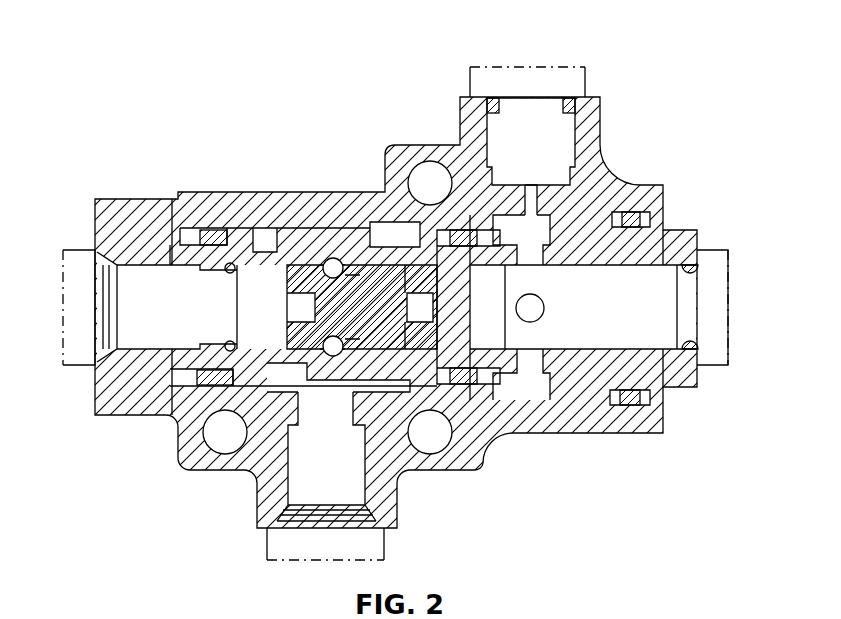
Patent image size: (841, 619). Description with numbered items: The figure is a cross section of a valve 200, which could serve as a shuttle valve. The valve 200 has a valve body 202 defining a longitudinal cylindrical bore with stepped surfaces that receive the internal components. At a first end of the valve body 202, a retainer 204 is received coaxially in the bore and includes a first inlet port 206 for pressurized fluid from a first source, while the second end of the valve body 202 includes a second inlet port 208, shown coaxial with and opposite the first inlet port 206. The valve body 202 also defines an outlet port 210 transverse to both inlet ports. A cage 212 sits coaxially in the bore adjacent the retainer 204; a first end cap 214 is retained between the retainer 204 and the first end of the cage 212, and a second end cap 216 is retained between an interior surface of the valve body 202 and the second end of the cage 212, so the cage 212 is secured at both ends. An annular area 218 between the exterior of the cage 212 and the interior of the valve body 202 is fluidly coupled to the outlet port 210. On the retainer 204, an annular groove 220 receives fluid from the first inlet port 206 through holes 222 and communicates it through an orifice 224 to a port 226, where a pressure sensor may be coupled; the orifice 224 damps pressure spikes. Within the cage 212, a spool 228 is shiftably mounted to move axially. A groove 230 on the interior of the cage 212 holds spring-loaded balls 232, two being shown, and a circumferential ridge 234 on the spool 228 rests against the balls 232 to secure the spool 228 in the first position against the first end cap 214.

The valve 200 is at (110, 120).
The valve body 202 is at (205, 199).
The retainer 204 is at (680, 238).
The first inlet port 206 is at (703, 308).
The second inlet port 208 is at (99, 335).
The outlet port 210 is at (319, 519).
The cage 212 is at (290, 237).
The first end cap 214 is at (457, 264).
The second end cap 216 is at (174, 261).
The annular area 218 is at (337, 222).
The annular groove 220 is at (534, 232).
The holes 222 is at (537, 276).
The channel or orifice 224 is at (532, 194).
The port 226 is at (531, 95).
The spool 228 is at (418, 274).
The groove 230 is at (351, 352).
The balls 232 is at (334, 337).
The circumferential ridge 234 is at (363, 273).